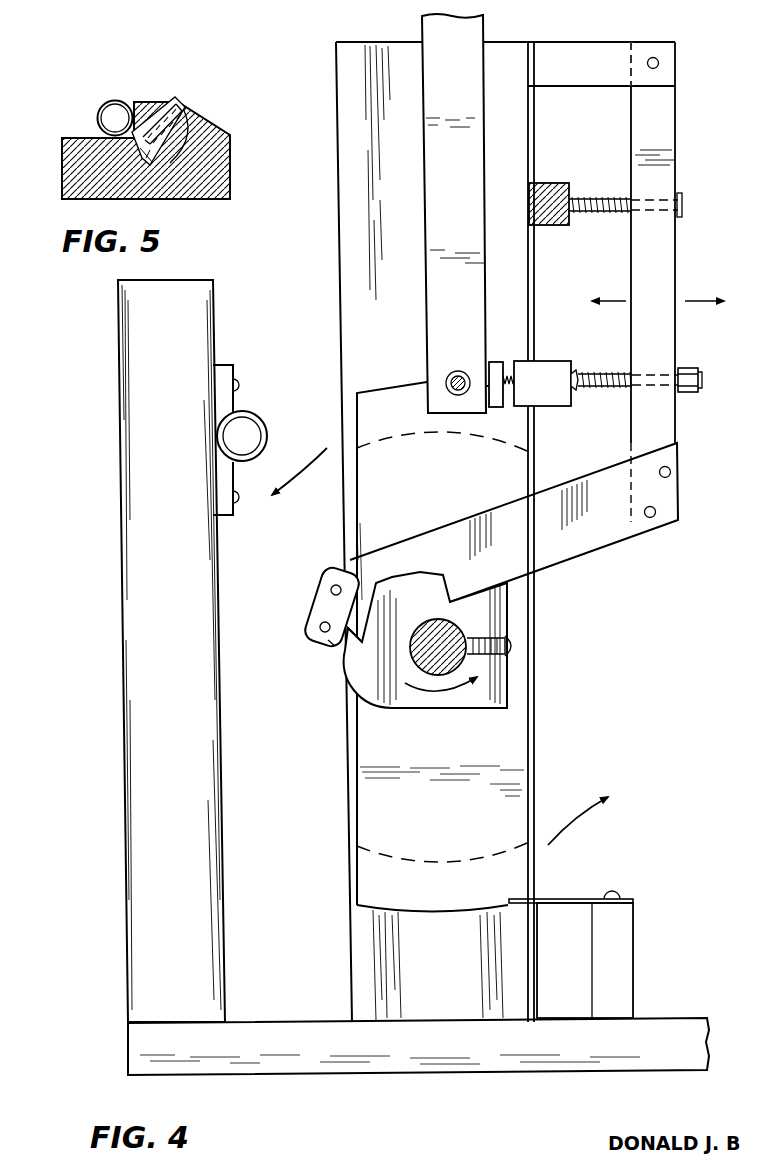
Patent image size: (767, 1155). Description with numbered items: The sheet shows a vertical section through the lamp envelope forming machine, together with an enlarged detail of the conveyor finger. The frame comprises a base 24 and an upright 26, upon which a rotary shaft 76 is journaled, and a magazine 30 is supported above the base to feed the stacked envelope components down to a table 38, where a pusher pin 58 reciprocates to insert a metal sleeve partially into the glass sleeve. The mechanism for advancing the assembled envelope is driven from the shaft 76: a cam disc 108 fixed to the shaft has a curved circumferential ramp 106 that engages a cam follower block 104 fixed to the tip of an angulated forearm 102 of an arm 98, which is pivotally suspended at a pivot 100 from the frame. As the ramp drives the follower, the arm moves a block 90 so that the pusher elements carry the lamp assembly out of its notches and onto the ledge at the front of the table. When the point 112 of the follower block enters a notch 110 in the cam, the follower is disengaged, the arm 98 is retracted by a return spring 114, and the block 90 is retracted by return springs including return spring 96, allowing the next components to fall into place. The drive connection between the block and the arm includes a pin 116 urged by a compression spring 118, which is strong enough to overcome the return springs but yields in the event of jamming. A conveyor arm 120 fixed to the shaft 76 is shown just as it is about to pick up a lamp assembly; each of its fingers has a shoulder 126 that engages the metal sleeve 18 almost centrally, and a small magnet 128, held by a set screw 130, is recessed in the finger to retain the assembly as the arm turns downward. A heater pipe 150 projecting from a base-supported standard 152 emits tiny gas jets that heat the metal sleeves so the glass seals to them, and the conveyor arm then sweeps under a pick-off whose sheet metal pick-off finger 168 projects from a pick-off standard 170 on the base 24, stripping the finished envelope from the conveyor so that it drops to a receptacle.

In FIG. 5, the metal sleeve 18 is at (98, 108).
In FIG. 4, the base 24 is at (474, 1060).
In FIG. 4, the upright 26 is at (353, 222).
In FIG. 4, the magazine 30 is at (422, 262).
In FIG. 4, the table 38 is at (497, 399).
In FIG. 4, the pusher pin 58 is at (462, 371).
In FIG. 4, the rotary shaft 76 is at (447, 629).
In FIG. 4, the block 90 is at (553, 394).
In FIG. 4, the return spring 96 is at (502, 358).
In FIG. 4, the arm 98 is at (665, 240).
In FIG. 4, the pivot 100 is at (659, 63).
In FIG. 4, the angulated forearm 102 is at (604, 527).
In FIG. 4, the cam follower block 104 is at (315, 603).
In FIG. 4, the curved circumferential ramp 106 is at (345, 667).
In FIG. 4, the cam disc 108 is at (493, 675).
In FIG. 4, the notch 110 is at (353, 637).
In FIG. 4, the point 112 is at (330, 640).
In FIG. 4, the return spring 114 is at (598, 204).
In FIG. 4, the pin 116 is at (597, 371).
In FIG. 4, the compression spring 118 is at (600, 387).
In FIG. 5, the conveyor arm 120 is at (215, 160).
In FIG. 4, the conveyor arm 120 is at (515, 750).
In FIG. 5, the shoulder 126 is at (181, 101).
In FIG. 5, the magnet 128 is at (214, 122).
In FIG. 5, the set screw 130 is at (192, 104).
In FIG. 4, the pipe 150 is at (262, 420).
In FIG. 4, the standard 152 is at (145, 575).
In FIG. 4, the pick-off finger 168 is at (558, 900).
In FIG. 4, the pick-off standard 170 is at (623, 933).